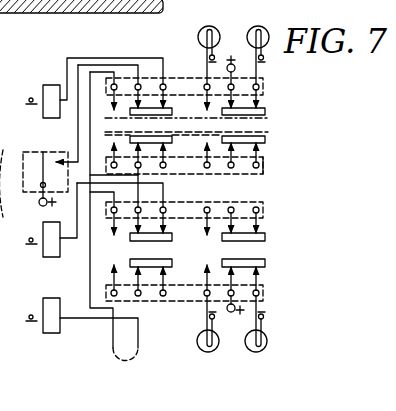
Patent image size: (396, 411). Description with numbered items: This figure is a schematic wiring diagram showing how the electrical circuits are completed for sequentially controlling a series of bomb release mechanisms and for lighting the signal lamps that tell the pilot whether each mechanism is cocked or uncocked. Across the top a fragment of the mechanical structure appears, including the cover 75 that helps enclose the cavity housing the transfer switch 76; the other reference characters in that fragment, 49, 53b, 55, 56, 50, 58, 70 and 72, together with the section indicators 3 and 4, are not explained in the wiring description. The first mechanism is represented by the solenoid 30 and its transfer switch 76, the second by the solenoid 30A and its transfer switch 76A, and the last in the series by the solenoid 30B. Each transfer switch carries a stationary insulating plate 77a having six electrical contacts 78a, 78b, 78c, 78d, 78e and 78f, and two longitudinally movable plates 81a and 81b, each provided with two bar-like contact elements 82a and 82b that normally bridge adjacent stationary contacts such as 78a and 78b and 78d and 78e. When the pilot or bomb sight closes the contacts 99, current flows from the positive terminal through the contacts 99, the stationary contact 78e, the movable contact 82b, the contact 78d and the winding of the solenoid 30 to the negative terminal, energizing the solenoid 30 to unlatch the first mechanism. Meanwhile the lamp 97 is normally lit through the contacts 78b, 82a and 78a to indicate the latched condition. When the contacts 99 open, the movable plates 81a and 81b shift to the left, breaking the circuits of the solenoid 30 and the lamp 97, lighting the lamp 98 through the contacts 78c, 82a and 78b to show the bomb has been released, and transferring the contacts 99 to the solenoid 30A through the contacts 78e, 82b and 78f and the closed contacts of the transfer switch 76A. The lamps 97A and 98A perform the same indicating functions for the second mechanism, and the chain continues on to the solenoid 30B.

The cover 75 is at (92, 6).
The cam 49 is at (35, 14).
The contact 53b is at (47, 14).
The contact arm 55 is at (67, 12).
The contact arm 56 is at (96, 12).
The section line 4 is at (101, 34).
The switch member 50 is at (114, 14).
The contact 58 is at (122, 14).
The lever 70 is at (140, 14).
The spring 72 is at (147, 13).
The section line 3 is at (56, 54).
The solenoid 30 is at (32, 8).
The solenoid 30A is at (50, 257).
The solenoid 30B is at (50, 333).
The contacts 99 is at (56, 152).
The transfer switch 76 is at (218, 131).
The transfer switch 76A is at (272, 252).
The upstanding longitudinal plate 77a is at (265, 166).
The electrical contact 78a is at (259, 88).
The electrical contact 78b is at (234, 84).
The electrical contact 78c is at (213, 79).
The electrical contact 78d is at (167, 86).
The electrical contact 78e is at (141, 84).
The electrical contact 78f is at (125, 129).
The longitudinally movable plate 81a is at (266, 119).
The longitudinally movable plate 81b is at (266, 132).
The bar-like contact element 82a is at (265, 108).
The bar-like contact element 82b is at (173, 110).
The lamp 97 is at (266, 32).
The lamp 98 is at (214, 31).
The lamp 97A is at (267, 343).
The lamp 98A is at (198, 343).